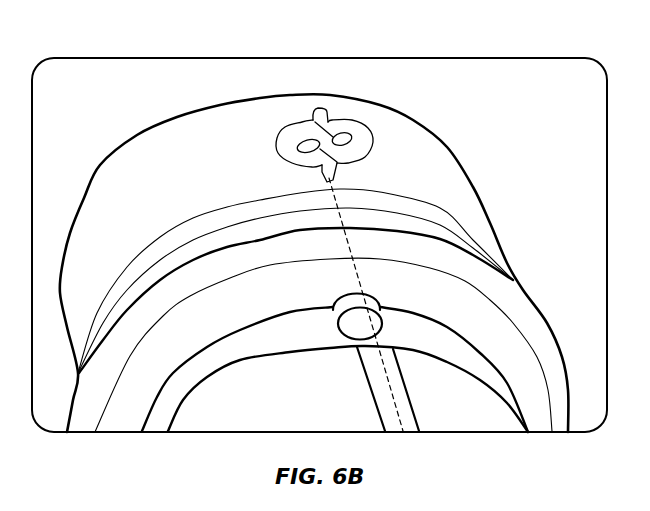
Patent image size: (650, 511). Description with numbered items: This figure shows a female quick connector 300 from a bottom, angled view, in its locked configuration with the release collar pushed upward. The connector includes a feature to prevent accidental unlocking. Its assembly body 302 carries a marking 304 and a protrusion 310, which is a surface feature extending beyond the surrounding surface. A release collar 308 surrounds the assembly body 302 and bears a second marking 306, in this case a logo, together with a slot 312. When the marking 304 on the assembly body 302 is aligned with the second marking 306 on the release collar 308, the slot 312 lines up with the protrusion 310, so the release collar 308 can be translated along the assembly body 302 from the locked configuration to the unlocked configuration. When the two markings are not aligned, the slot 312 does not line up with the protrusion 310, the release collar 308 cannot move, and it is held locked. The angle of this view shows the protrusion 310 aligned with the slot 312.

The female quick connector 300 is at (126, 124).
The assembly body 302 is at (490, 406).
The marking 304 is at (400, 380).
The second marking 306 is at (320, 110).
The release collar 308 is at (473, 267).
The protrusion 310 is at (377, 322).
The slot 312 is at (367, 293).